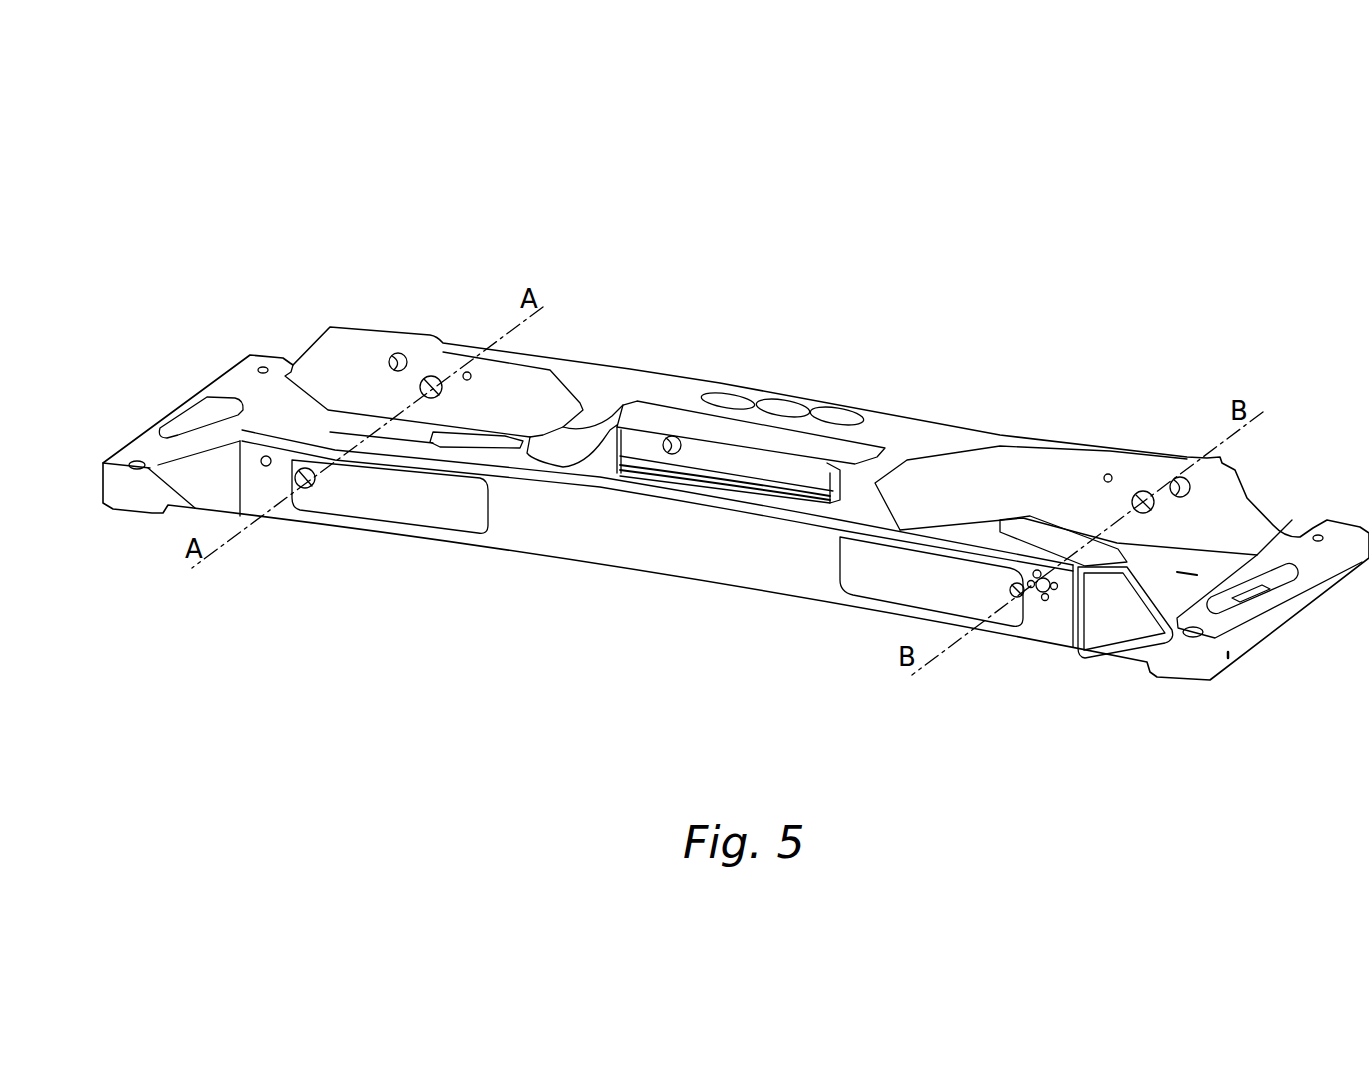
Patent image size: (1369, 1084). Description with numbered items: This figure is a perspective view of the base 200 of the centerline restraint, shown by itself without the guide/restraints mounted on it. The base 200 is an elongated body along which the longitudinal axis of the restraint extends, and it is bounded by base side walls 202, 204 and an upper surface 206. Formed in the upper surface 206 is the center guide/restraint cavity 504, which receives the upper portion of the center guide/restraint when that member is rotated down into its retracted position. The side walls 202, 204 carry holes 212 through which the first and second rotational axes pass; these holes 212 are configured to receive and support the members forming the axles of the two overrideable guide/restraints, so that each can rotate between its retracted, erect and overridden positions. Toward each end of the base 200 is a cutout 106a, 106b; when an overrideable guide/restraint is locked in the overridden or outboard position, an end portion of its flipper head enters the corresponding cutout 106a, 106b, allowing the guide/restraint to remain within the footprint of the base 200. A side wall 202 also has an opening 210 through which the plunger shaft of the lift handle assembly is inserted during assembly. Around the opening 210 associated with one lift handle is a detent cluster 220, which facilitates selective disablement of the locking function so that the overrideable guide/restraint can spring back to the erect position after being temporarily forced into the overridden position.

The base 200 is at (1233, 203).
The cutout 106a is at (222, 410).
The cutout 106b is at (1277, 563).
The base side wall 202 is at (1040, 483).
The base side wall 204 is at (658, 555).
The upper surface 206 is at (914, 432).
The opening 210 is at (395, 354).
The hole 212 is at (434, 378).
The detent cluster 220 is at (1043, 600).
The center guide/restraint cavity 504 is at (577, 453).